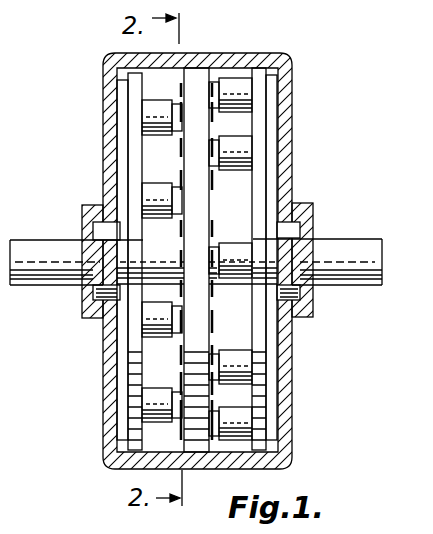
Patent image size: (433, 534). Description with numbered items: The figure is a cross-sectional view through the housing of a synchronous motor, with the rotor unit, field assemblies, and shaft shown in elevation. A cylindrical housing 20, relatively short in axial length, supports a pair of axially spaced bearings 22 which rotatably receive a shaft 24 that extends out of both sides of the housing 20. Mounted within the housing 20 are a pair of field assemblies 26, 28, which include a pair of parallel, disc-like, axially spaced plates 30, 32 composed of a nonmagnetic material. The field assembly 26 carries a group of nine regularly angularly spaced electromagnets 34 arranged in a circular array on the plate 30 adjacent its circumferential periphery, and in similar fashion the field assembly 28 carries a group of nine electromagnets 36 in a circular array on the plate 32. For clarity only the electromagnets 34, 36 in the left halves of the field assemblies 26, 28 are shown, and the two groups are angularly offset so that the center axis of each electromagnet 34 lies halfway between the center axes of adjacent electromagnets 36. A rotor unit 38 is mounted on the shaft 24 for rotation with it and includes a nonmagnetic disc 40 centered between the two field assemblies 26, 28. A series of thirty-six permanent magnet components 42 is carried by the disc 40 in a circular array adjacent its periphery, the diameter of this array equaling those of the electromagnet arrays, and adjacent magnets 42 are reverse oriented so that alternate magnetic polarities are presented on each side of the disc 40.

The cylindrical housing 20 is at (290, 80).
The bearings 22 is at (95, 232).
The shaft 24 is at (340, 284).
The field assembly 26 is at (155, 78).
The field assembly 28 is at (236, 68).
The plate 30 is at (134, 150).
The plate 32 is at (258, 124).
The electromagnets 34 is at (157, 190).
The electromagnets 36 is at (236, 242).
The rotor unit 38 is at (198, 66).
The nonmagnetic disc 40 is at (196, 355).
The permanent magnet components 42 is at (214, 343).